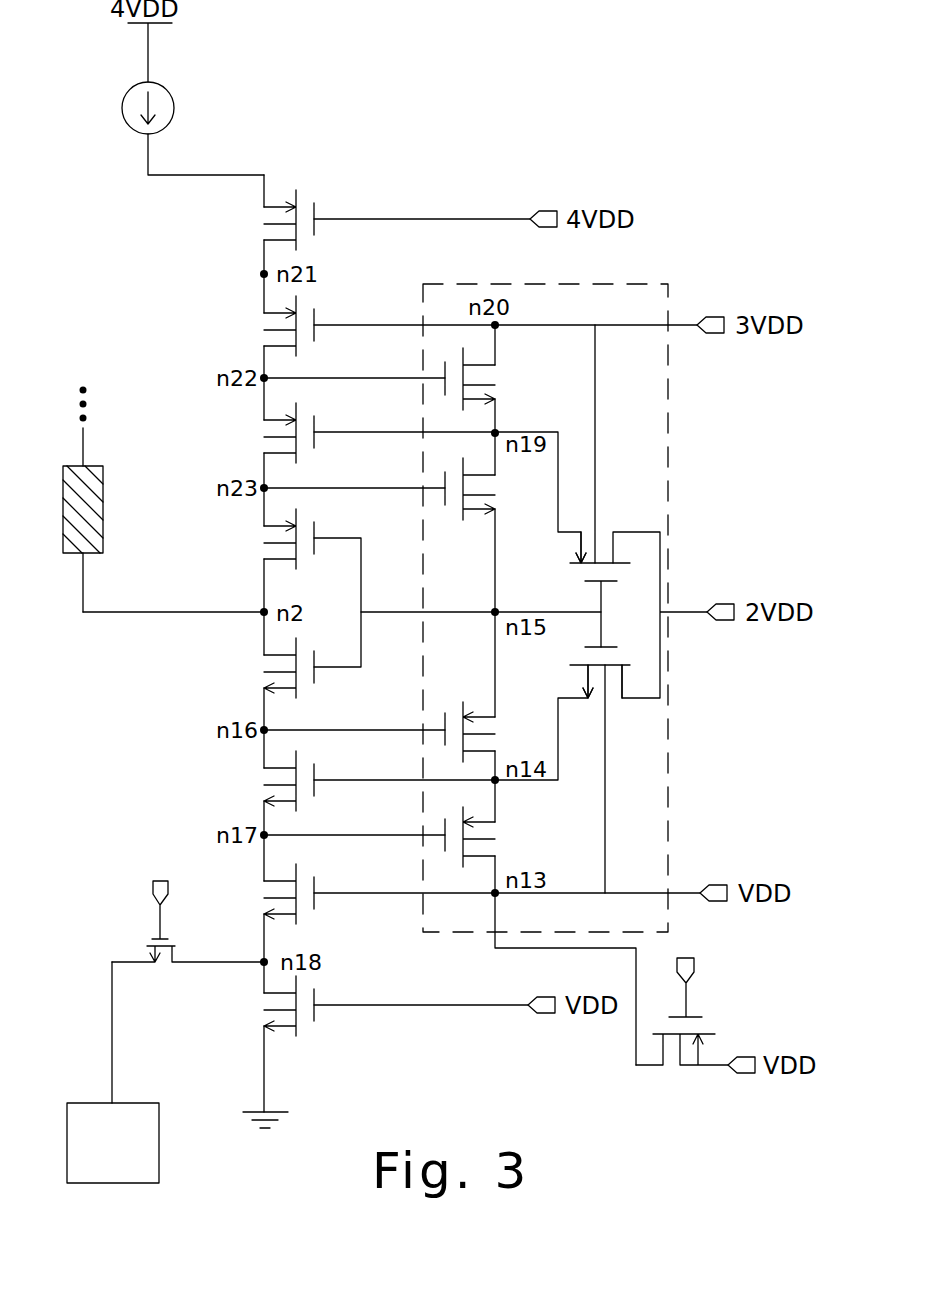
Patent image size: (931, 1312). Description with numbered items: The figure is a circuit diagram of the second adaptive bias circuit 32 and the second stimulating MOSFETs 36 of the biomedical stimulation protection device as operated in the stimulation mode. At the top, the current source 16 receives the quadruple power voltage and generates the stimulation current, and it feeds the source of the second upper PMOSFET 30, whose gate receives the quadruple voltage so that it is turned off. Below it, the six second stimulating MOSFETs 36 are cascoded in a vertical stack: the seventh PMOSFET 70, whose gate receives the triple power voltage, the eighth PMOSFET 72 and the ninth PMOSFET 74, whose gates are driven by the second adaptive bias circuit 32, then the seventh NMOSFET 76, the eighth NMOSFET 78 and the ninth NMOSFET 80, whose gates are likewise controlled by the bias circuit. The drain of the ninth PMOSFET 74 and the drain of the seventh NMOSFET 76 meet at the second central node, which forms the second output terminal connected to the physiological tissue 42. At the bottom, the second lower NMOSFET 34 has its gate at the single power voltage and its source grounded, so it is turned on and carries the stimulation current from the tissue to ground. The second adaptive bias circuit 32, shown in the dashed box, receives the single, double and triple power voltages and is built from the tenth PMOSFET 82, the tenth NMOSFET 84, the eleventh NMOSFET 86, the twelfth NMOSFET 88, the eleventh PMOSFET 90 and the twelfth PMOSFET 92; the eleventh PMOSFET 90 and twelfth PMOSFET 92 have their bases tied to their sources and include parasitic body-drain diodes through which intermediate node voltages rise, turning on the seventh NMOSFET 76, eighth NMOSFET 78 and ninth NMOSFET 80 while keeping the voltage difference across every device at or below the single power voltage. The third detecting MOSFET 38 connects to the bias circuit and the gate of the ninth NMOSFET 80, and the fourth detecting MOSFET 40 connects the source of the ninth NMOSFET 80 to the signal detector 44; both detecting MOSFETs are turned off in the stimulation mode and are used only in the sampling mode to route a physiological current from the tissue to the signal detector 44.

The current source 16 is at (122, 108).
The second upper PMOSFET 30 is at (264, 225).
The seventh PMOSFET 70 is at (264, 330).
The eighth PMOSFET 72 is at (264, 435).
The ninth PMOSFET 74 is at (264, 543).
The seventh NMOSFET 76 is at (264, 673).
The eighth NMOSFET 78 is at (264, 787).
The ninth NMOSFET 80 is at (264, 898).
The second lower NMOSFET 34 is at (264, 1012).
The second stimulating MOSFETs 36 is at (324, 317).
The second adaptive bias circuit 32 is at (666, 283).
The physiological tissue 42 is at (103, 483).
The fourth detecting MOSFET 40 is at (150, 952).
The signal detector 44 is at (73, 1100).
The third detecting MOSFET 38 is at (689, 1068).
The tenth PMOSFET 82 is at (615, 531).
The tenth NMOSFET 84 is at (628, 700).
The eleventh NMOSFET 86 is at (495, 388).
The twelfth NMOSFET 88 is at (495, 494).
The eleventh PMOSFET 90 is at (495, 734).
The twelfth PMOSFET 92 is at (495, 838).